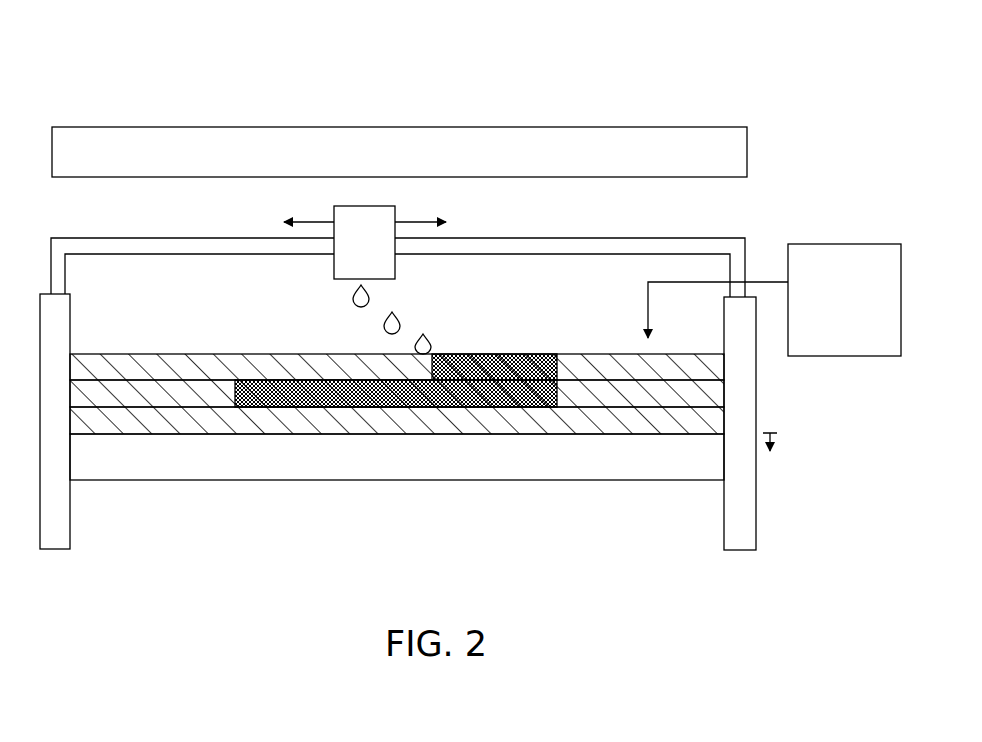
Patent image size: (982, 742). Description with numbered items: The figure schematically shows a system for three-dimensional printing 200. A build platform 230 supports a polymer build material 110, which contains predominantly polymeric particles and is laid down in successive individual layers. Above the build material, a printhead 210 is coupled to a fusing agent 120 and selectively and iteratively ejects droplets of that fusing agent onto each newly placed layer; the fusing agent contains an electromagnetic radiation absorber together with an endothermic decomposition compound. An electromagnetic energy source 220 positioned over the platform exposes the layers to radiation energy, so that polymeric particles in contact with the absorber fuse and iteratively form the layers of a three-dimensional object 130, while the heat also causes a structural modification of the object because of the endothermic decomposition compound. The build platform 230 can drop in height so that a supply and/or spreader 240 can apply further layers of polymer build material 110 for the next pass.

The system for three-dimensional printing 200 is at (163, 77).
The electromagnetic energy source 220 is at (421, 163).
The printhead 210 is at (386, 254).
The supply and/or spreader 240 is at (865, 312).
The build platform 230 is at (537, 470).
The polymer build material 110 is at (137, 387).
The three-dimensional object 130 is at (360, 392).
The fusing agent 120 is at (354, 298).